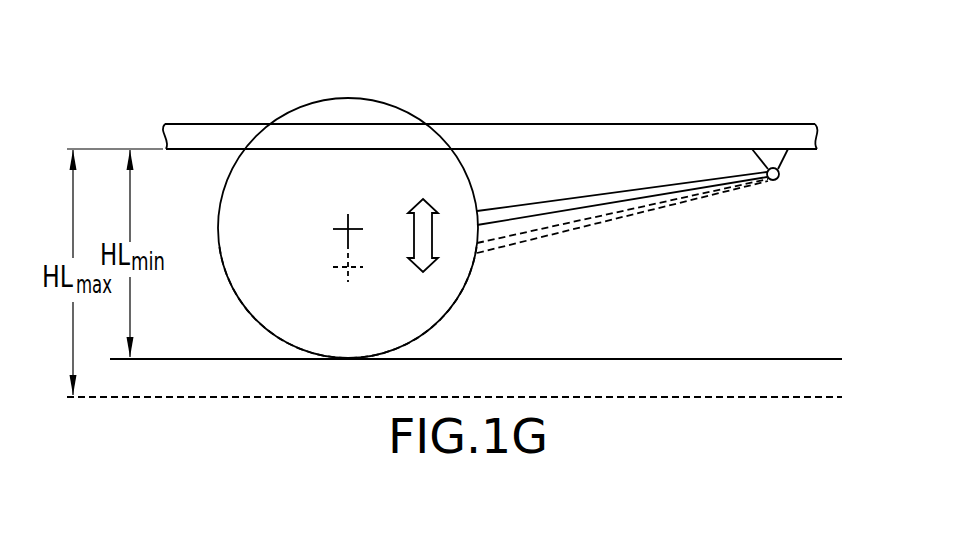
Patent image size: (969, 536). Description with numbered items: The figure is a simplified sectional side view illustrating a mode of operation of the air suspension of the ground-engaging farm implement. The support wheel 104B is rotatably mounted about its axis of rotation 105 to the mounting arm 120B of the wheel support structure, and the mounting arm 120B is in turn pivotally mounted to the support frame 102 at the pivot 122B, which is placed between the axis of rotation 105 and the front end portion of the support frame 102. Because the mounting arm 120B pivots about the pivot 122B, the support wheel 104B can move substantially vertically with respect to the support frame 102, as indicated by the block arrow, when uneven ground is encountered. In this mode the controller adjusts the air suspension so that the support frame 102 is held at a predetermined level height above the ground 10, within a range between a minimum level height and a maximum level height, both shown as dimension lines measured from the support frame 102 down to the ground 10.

The ground 10 is at (695, 359).
The support frame 102 is at (618, 124).
The support wheel 104B is at (372, 162).
The axis of rotation 105 is at (349, 228).
The mounting arm 120B is at (568, 205).
The pivot 122B is at (779, 178).